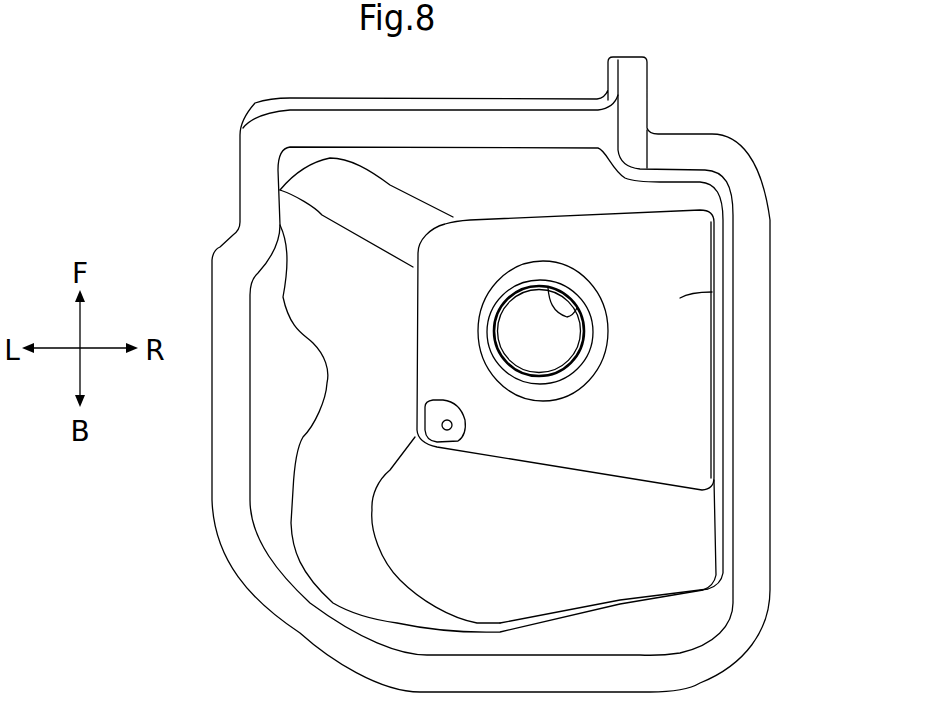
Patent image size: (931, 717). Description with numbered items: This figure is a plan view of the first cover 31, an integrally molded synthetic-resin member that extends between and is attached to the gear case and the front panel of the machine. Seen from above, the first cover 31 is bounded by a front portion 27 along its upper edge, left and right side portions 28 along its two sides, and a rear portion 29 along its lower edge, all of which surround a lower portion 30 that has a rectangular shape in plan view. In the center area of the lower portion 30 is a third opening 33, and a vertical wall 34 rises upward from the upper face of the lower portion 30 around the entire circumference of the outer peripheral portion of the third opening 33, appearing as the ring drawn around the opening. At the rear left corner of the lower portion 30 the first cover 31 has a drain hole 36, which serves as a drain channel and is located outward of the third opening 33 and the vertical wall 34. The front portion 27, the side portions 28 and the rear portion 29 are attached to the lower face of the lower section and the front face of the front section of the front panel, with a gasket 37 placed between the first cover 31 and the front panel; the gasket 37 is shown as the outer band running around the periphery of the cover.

The front portion 27 is at (480, 173).
The side portions 28 is at (330, 443).
The rear portion 29 is at (557, 550).
The lower portion 30 is at (660, 402).
The first cover 31 is at (190, 176).
The third opening 33 is at (575, 310).
The vertical wall 34 is at (563, 387).
The drain hole 36 is at (447, 430).
The gasket 37 is at (760, 213).